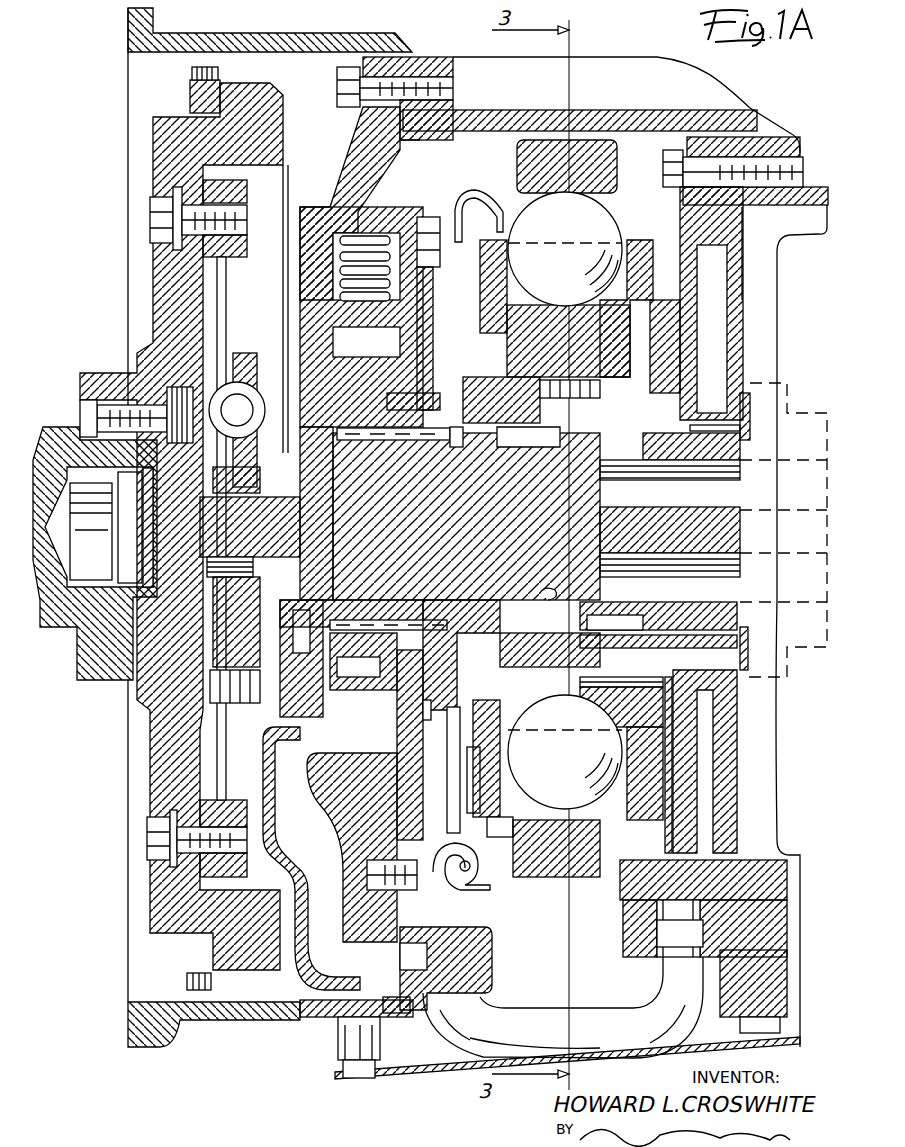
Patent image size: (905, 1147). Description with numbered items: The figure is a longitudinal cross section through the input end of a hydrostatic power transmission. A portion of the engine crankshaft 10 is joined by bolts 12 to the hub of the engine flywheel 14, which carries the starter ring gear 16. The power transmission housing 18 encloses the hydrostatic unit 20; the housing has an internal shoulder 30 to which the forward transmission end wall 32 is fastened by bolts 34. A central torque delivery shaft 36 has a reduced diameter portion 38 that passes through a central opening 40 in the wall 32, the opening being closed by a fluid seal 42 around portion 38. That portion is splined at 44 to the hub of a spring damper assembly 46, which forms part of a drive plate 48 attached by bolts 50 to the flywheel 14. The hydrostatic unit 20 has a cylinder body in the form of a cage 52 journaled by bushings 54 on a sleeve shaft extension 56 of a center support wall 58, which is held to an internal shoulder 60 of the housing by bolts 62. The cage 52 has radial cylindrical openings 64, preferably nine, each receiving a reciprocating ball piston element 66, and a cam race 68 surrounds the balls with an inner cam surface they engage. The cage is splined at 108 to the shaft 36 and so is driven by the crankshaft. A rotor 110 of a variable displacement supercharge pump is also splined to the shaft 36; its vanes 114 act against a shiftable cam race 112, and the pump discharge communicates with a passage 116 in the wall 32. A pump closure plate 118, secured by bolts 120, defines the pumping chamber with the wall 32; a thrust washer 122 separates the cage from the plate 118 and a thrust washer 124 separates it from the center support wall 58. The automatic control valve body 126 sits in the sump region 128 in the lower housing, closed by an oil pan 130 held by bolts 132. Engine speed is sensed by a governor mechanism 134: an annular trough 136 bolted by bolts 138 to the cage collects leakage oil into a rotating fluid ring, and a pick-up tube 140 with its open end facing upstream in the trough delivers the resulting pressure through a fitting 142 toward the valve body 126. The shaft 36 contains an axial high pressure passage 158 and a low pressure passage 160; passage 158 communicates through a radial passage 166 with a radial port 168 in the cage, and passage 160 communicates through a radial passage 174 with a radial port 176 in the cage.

The crankshaft 10 is at (50, 427).
The bolts 12 is at (172, 447).
The engine flywheel 14 is at (160, 143).
The engine starter ring gear 16 is at (190, 97).
The power transmission housing 18 is at (487, 115).
The hydrostatic unit 20 is at (620, 210).
The internal shoulder 30 is at (392, 140).
The forward transmission end wall 32 is at (345, 165).
The bolts 34 is at (345, 110).
The central torque delivery shaft 36 is at (392, 583).
The reduced diameter portion 38 is at (210, 540).
The central opening 40 is at (350, 470).
The fluid seal 42 is at (312, 580).
The spline 44 is at (310, 500).
The spring damper assembly 46 is at (205, 393).
The drive plate 48 is at (220, 280).
The bolts 50 is at (150, 218).
The cage 52 is at (690, 367).
The bushings 54 is at (501, 400).
The sleeve shaft extension 56 is at (500, 447).
The center support wall 58 is at (680, 250).
The internal shoulder 60 is at (745, 205).
The bolts 62 is at (675, 150).
The radial cylindrical openings 64 is at (615, 850).
The ball piston element 66 is at (520, 850).
The cam race 68 is at (565, 880).
The spline 108 is at (400, 598).
The rotor 110 is at (380, 442).
The cam race 112 is at (420, 770).
The vanes 114 is at (418, 745).
The passage 116 is at (295, 1010).
The pump closure plate 118 is at (400, 723).
The bolts 120 is at (427, 217).
The thrust washer 122 is at (455, 447).
The thrust washer 124 is at (690, 363).
The automatic control valve body 126 is at (725, 970).
The sump region 128 is at (410, 1080).
The oil pan 130 is at (440, 1082).
The bolts 132 is at (335, 1075).
The governor mechanism 134 is at (493, 868).
The annular trough 136 is at (490, 195).
The bolts 138 is at (482, 300).
The speed sensing pressure pick-up tube 140 is at (445, 880).
The fitting 142 is at (390, 898).
The high pressure passage 158 is at (745, 510).
The low pressure passage 160 is at (745, 600).
The radial passage 166 is at (680, 478).
The radial port 168 is at (585, 380).
The radial passage 174 is at (556, 597).
The radial port 176 is at (548, 800).